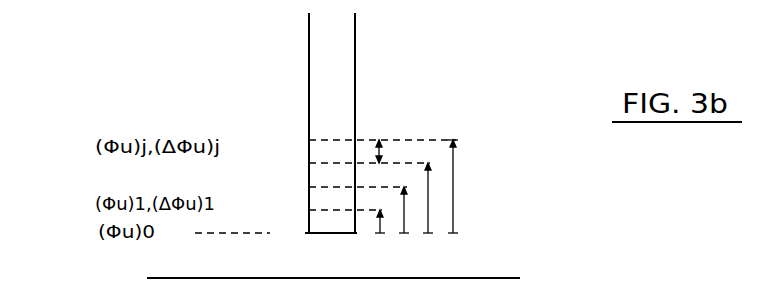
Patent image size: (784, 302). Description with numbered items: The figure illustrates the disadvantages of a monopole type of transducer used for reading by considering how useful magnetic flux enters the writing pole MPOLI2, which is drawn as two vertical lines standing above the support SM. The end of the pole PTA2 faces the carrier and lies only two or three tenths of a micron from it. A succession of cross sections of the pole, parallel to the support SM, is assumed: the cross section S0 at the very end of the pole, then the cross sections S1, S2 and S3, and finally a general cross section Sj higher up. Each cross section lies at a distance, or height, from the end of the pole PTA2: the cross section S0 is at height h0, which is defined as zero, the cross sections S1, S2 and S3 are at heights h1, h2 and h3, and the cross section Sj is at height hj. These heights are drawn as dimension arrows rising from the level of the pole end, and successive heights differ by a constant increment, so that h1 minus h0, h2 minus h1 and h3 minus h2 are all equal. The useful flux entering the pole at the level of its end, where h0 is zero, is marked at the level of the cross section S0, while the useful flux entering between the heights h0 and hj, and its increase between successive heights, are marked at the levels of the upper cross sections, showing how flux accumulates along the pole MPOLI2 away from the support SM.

The writing pole MPOLI2 is at (323, 42).
The end of the pole PTA2 is at (317, 233).
The support SM is at (484, 279).
The j-th cross section Sj is at (364, 135).
The third cross section S3 is at (351, 159).
The second cross section S2 is at (340, 182).
The first cross section S1 is at (327, 204).
The zero cross section S0 is at (245, 226).
The height h0 is at (367, 227).
The height h1 is at (389, 224).
The height h2 is at (414, 210).
The height h3 is at (438, 198).
The height hj is at (461, 186).